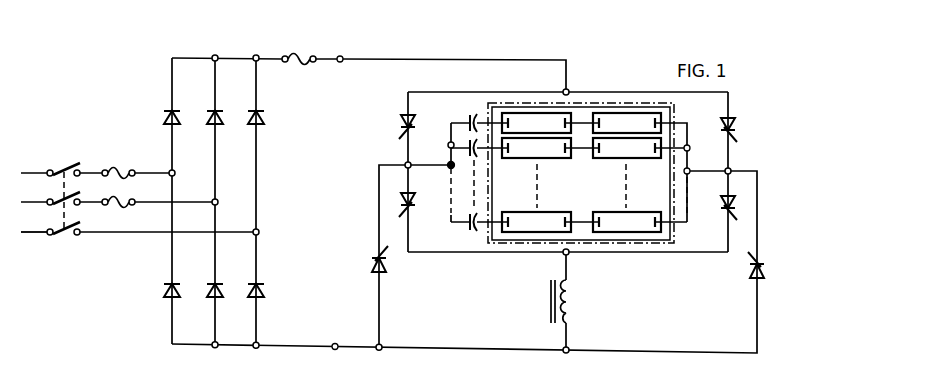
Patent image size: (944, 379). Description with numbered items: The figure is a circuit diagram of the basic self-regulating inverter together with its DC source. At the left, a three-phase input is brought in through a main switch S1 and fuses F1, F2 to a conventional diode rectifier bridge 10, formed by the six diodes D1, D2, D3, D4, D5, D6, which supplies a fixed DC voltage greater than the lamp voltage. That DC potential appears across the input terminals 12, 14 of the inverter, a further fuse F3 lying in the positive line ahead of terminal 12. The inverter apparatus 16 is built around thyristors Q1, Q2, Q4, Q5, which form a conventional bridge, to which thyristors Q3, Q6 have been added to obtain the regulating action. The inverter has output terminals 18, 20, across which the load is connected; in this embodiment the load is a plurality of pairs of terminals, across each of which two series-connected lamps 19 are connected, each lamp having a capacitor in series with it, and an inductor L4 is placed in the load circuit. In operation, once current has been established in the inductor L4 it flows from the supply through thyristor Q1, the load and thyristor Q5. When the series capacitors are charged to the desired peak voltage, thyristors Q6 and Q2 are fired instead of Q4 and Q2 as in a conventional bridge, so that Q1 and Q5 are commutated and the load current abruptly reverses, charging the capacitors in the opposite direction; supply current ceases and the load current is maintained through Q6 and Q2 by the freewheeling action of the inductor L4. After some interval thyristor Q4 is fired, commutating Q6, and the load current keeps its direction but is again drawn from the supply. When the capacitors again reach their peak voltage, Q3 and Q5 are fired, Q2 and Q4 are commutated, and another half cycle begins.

The three-pole main switch S1 is at (68, 166).
The fuse F1 is at (121, 172).
The fuse F2 is at (122, 204).
The DC bus fuse F3 is at (292, 54).
The diode rectifier bridge 10 is at (120, 263).
The input terminal 12 is at (343, 58).
The input terminal 14 is at (338, 344).
The inverter apparatus 16 is at (628, 83).
The output terminal 18 is at (449, 162).
The lamps 19 is at (558, 160).
The output terminal 20 is at (689, 168).
The diode D1 is at (163, 114).
The diode D2 is at (207, 112).
The diode D3 is at (248, 113).
The diode D4 is at (164, 290).
The diode D5 is at (206, 288).
The diode D6 is at (248, 288).
The thyristor Q1 is at (401, 120).
The thyristor Q2 is at (413, 203).
The thyristor Q3 is at (384, 272).
The thyristor Q4 is at (735, 128).
The thyristor Q5 is at (722, 204).
The thyristor Q6 is at (762, 274).
The inductor L4 is at (551, 324).